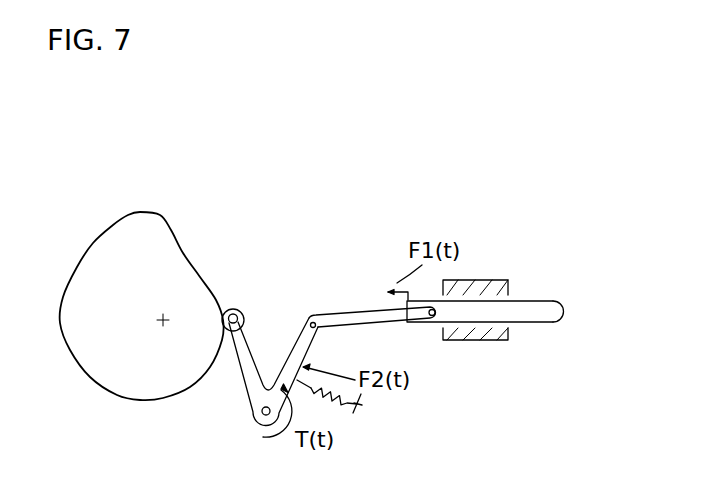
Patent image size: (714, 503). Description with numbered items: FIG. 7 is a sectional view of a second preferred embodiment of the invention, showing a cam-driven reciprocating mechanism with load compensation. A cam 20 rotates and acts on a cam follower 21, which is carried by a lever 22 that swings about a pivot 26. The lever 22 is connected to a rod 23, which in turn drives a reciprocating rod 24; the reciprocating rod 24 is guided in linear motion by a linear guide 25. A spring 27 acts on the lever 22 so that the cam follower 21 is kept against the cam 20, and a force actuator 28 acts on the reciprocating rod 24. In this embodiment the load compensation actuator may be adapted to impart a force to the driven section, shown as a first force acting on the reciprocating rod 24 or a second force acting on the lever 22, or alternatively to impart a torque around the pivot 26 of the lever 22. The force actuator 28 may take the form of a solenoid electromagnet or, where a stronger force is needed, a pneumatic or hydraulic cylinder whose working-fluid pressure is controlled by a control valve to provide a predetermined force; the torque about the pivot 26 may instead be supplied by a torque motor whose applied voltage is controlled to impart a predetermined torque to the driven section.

The cam 20 is at (163, 237).
The cam follower 21 is at (237, 308).
The lever 22 is at (243, 382).
The rod 23 is at (355, 308).
The reciprocating rod 24 is at (528, 320).
The linear guide 25 is at (473, 338).
The pivot 26 is at (260, 421).
The spring 27 is at (338, 408).
The force actuator 28 is at (555, 303).